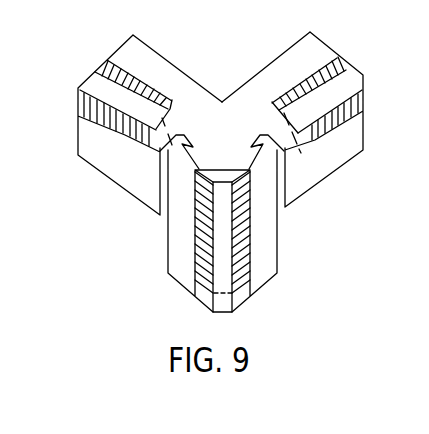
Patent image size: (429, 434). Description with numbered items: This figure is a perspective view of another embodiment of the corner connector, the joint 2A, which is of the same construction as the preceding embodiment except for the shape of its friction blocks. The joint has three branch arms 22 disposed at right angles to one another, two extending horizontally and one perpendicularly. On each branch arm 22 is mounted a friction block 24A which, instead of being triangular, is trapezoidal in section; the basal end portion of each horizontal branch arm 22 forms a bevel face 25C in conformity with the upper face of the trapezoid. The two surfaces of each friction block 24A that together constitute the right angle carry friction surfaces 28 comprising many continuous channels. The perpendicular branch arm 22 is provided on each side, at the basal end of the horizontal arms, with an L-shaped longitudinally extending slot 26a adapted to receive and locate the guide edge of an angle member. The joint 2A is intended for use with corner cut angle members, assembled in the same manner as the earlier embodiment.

The branch arm 22 is at (150, 55).
The friction block 24A is at (349, 75).
The bevel face 25C is at (152, 82).
The friction surface 28 is at (106, 126).
The L-shaped longitudinally extending slot 26a is at (284, 180).
The joint 2A is at (138, 217).